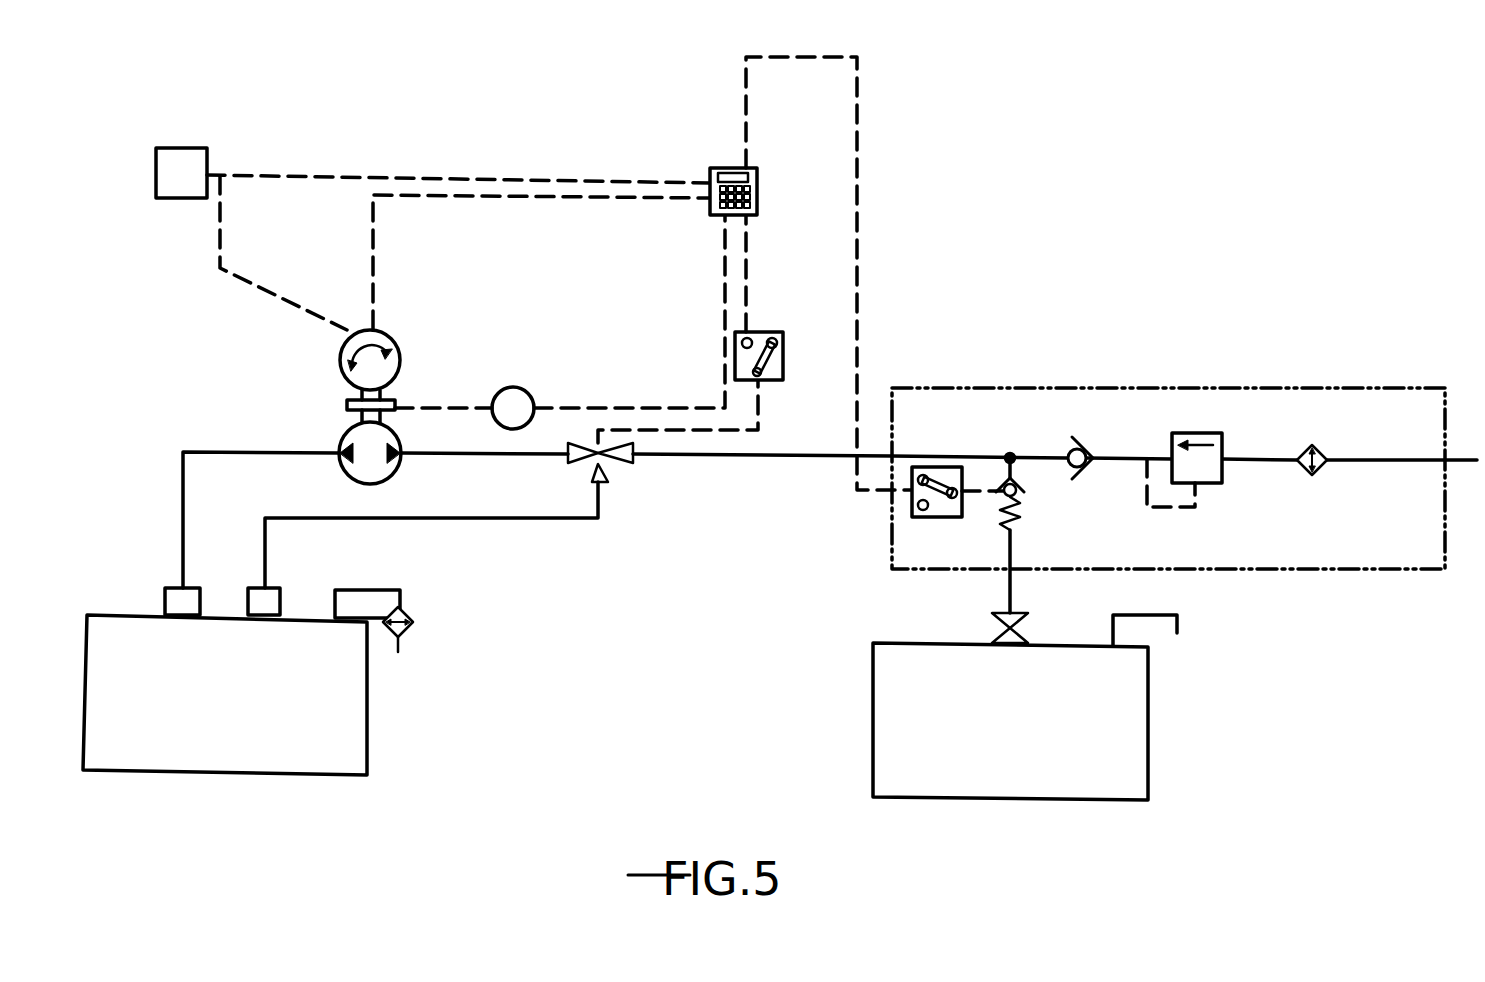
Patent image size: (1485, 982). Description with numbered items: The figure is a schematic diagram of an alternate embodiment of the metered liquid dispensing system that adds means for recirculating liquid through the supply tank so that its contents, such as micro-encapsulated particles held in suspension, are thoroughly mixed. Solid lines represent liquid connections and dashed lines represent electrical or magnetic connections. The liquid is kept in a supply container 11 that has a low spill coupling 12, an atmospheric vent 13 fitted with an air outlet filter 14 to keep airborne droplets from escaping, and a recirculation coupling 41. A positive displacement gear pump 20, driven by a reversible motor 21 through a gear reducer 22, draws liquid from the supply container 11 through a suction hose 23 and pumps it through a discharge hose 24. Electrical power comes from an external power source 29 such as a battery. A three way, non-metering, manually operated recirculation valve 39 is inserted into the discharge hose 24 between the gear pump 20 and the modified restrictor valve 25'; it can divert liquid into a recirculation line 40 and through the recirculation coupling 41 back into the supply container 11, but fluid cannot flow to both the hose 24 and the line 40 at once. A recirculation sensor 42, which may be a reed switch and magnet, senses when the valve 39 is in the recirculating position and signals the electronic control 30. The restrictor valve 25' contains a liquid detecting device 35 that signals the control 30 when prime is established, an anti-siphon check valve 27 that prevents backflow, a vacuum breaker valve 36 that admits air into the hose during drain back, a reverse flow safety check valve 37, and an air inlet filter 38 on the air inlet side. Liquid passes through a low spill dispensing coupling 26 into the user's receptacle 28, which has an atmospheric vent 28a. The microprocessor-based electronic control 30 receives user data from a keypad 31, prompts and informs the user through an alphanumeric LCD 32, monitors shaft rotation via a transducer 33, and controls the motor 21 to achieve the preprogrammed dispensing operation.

The supply container 11 is at (252, 723).
The low spill coupling 12 is at (190, 586).
The atmospheric vent 13 is at (353, 590).
The air outlet filter 14 is at (410, 612).
The positive displacement gear pump 20 is at (377, 470).
The reversible motor 21 is at (378, 330).
The gear reducer 22 is at (348, 403).
The suction hose 23 is at (240, 445).
The discharge hose 24 is at (773, 453).
The modified restrictor valve 25' is at (1168, 429).
The low spill dispensing coupling 26 is at (1000, 623).
The anti-siphon check valve 27 is at (1025, 517).
The user's receptacle 28 is at (1027, 735).
The atmospheric vent 28a is at (1145, 615).
The external power source 29 is at (157, 160).
The electronic control 30 is at (762, 172).
The keypad 31 is at (758, 200).
The alphanumeric LCD 32 is at (723, 168).
The transducer 33 is at (518, 387).
The liquid detecting device 35 is at (920, 518).
The vacuum breaker valve 36 is at (1185, 433).
The reverse flow safety check valve 37 is at (1080, 437).
The air inlet filter 38 is at (1302, 447).
The recirculation valve 39 is at (623, 463).
The recirculation line 40 is at (530, 520).
The recirculation coupling 41 is at (272, 586).
The recirculation sensor 42 is at (772, 332).